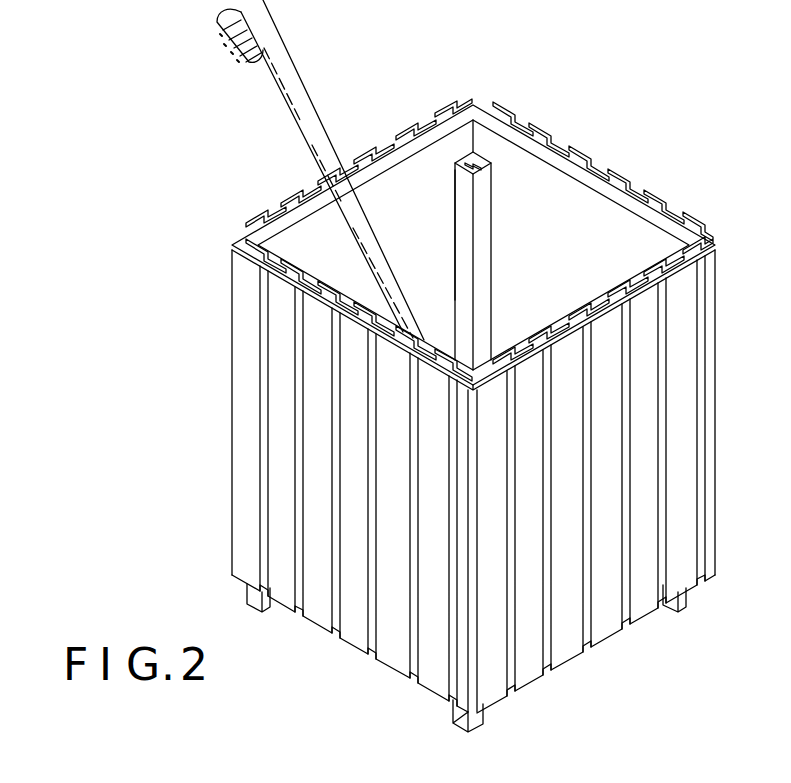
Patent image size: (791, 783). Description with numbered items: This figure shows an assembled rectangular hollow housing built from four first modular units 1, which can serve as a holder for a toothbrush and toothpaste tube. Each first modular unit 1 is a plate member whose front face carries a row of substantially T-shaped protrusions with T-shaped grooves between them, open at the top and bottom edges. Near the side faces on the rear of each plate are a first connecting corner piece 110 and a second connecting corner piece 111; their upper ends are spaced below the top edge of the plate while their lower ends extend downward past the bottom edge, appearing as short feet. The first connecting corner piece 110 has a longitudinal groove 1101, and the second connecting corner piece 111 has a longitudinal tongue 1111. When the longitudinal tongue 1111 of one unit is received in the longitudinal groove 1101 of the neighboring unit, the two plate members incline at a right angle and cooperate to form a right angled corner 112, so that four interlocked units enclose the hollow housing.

The first modular unit 1 is at (232, 418).
The first connecting corner piece 110 is at (483, 158).
The second connecting corner piece 111 is at (462, 158).
The right angled corner 112 is at (471, 108).
The longitudinal groove 1101 is at (490, 180).
The longitudinal tongue 1111 is at (457, 178).